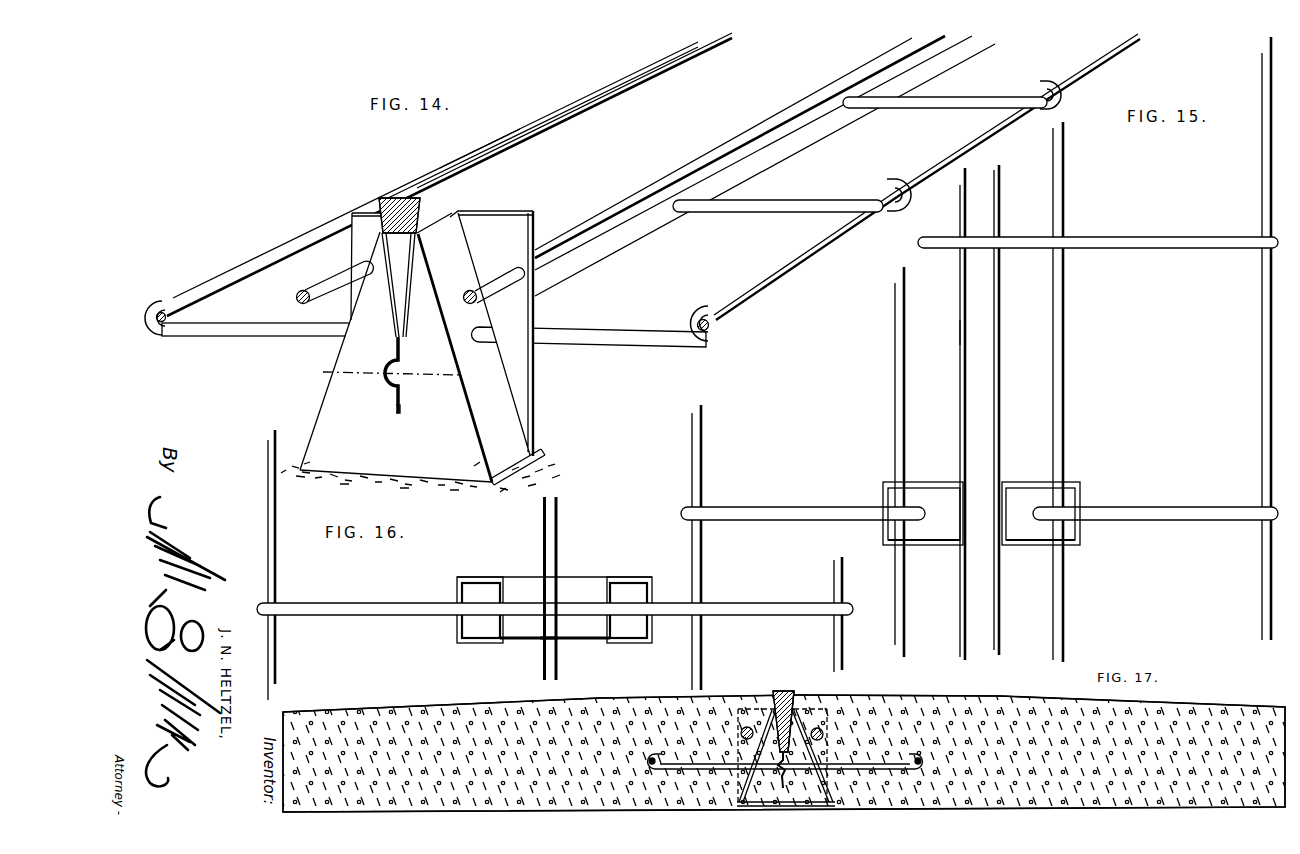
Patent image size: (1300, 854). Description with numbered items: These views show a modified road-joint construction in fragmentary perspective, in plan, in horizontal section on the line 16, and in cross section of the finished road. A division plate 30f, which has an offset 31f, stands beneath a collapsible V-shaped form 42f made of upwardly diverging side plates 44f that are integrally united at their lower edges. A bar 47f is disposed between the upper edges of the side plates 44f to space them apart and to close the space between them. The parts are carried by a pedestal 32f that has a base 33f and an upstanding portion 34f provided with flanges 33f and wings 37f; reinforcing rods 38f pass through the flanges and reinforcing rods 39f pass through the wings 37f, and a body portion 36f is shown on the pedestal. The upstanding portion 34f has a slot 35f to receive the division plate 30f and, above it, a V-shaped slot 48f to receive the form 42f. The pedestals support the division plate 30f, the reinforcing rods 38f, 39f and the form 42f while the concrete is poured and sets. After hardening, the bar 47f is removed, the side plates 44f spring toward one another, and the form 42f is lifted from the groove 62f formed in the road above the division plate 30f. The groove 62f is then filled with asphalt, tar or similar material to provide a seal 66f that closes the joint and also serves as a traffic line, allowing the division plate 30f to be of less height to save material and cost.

In FIG. 14, the section line 16 is at (265, 320).
In FIG. 14, the division plate 30f is at (400, 393).
In FIG. 16, the division plate 30f is at (559, 545).
In FIG. 14, the offset 31f is at (380, 382).
In FIG. 16, the offset 31f is at (557, 502).
In FIG. 14, the pedestal 32f is at (310, 390).
In FIG. 15, the pedestal 32f is at (1088, 465).
In FIG. 16, the pedestal 32f is at (518, 562).
In FIG. 17, the pedestal 32f is at (797, 724).
In FIG. 14, the base 33f is at (540, 458).
In FIG. 16, the base 33f is at (568, 587).
In FIG. 14, the upstanding portion 34f is at (396, 459).
In FIG. 16, the upstanding portion 34f is at (578, 642).
In FIG. 14, the slot 35f is at (393, 413).
In FIG. 16, the slot 35f is at (549, 636).
In FIG. 14, the side plate / clip body 36f is at (500, 390).
In FIG. 15, the side plate / clip body 36f is at (937, 530).
In FIG. 16, the side plate / clip body 36f is at (615, 625).
In FIG. 14, the wings 37f is at (519, 307).
In FIG. 15, the wings 37f is at (925, 489).
In FIG. 16, the wings 37f is at (628, 582).
In FIG. 14, the reinforcing rods 38f is at (602, 343).
In FIG. 15, the reinforcing rods 38f is at (1137, 512).
In FIG. 16, the reinforcing rods 38f is at (720, 607).
In FIG. 17, the reinforcing rods 38f is at (710, 771).
In FIG. 14, the reinforcing rods 39f is at (616, 210).
In FIG. 15, the reinforcing rods 39f is at (1064, 390).
In FIG. 17, the reinforcing rods 39f is at (743, 728).
In FIG. 14, the form 42f is at (537, 93).
In FIG. 15, the form 42f is at (951, 374).
In FIG. 14, the side plates 44f is at (503, 168).
In FIG. 15, the side plates 44f is at (966, 332).
In FIG. 14, the bar 47f is at (425, 182).
In FIG. 15, the bar 47f is at (983, 404).
In FIG. 14, the V-shaped slot 48f is at (410, 304).
In FIG. 17, the groove 62f is at (796, 708).
In FIG. 17, the seal 66f is at (781, 690).